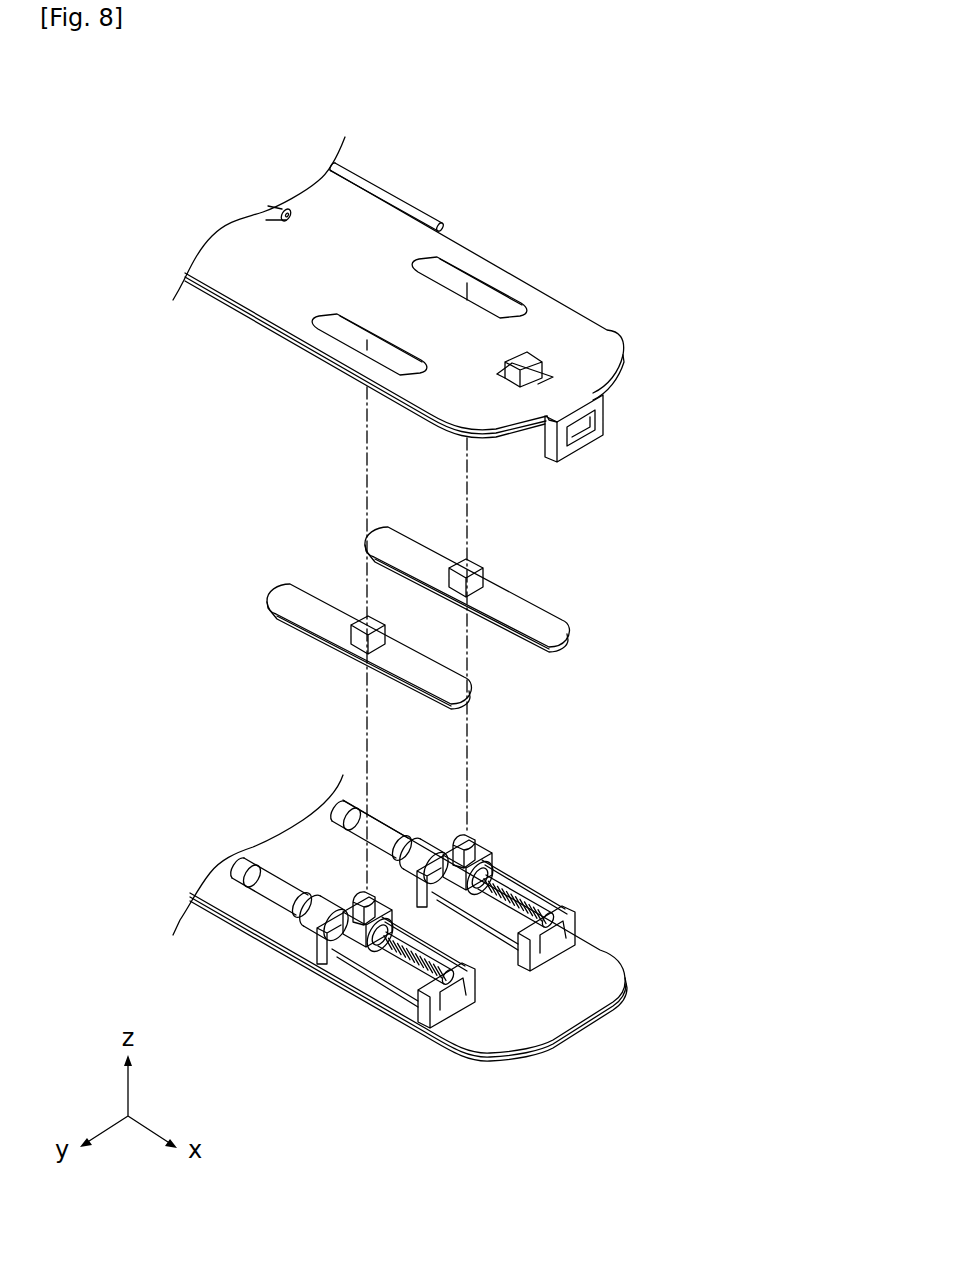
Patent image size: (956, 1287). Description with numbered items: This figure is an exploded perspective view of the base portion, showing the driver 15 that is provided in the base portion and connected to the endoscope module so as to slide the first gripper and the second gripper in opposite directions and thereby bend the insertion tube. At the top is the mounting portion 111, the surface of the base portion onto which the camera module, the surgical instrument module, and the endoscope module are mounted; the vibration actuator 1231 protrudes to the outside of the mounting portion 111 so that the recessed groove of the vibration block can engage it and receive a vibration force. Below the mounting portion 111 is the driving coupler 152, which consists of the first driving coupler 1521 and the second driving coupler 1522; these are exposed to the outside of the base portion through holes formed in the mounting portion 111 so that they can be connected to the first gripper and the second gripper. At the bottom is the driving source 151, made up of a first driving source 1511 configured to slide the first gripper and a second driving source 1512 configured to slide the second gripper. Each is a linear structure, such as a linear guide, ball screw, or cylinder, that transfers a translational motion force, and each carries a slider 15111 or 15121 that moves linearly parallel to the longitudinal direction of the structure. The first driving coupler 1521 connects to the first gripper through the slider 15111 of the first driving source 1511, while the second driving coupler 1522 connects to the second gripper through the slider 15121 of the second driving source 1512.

The driver 15 is at (113, 108).
The mounting portion 111 is at (598, 340).
The vibration actuator 1231 is at (530, 360).
The driving source 151 is at (243, 740).
The first driving source 1511 is at (245, 868).
The slider 15111 is at (352, 937).
The second driving source 1512 is at (338, 812).
The slider 15121 is at (478, 862).
The driving coupler 152 is at (537, 754).
The first driving coupler 1521 is at (462, 697).
The second driving coupler 1522 is at (557, 640).